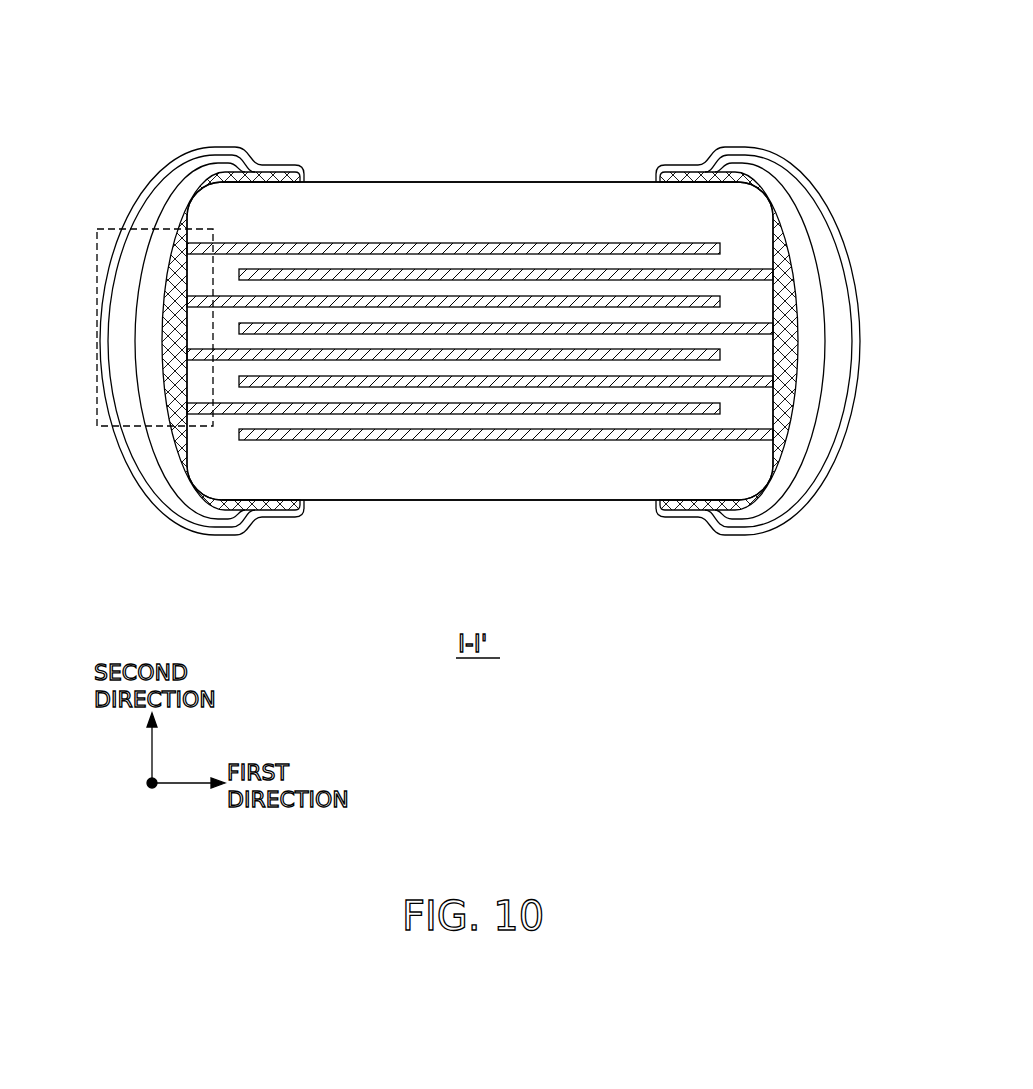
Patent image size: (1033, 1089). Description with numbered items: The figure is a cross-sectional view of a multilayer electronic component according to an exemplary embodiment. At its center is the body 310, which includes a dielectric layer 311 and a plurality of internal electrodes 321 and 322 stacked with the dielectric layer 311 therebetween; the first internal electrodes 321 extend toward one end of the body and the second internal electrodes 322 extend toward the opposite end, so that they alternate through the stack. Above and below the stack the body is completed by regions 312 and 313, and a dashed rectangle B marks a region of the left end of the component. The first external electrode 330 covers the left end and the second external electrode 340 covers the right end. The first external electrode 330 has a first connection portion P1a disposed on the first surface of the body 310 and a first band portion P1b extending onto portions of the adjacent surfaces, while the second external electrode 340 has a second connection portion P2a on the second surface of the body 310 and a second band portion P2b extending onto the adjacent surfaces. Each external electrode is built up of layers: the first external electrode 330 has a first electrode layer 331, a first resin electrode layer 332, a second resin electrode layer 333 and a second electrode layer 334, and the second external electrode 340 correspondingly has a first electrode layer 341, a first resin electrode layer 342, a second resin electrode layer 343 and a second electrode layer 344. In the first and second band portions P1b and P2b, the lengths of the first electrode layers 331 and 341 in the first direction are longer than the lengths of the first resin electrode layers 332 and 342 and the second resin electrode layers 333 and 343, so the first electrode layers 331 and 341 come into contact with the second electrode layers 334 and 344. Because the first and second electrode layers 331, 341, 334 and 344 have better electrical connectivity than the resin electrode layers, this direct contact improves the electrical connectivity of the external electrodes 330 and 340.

The body 310 is at (593, 182).
The dielectric layer 311 is at (556, 262).
The upper cover portion 312 is at (341, 207).
The lower cover portion 313 is at (428, 488).
The first internal electrode 321 is at (420, 243).
The second internal electrode 322 is at (486, 269).
The first external electrode 330 is at (690, 693).
The first electrode layer 331 is at (175, 296).
The first resin electrode layer 332 is at (150, 322).
The second resin electrode layer 333 is at (123, 349).
The second electrode layer 334 is at (103, 378).
The second external electrode 340 is at (830, 693).
The first electrode layer 341 is at (790, 297).
The first resin electrode layer 342 is at (815, 322).
The second resin electrode layer 343 is at (837, 350).
The second electrode layer 344 is at (855, 378).
The enlarged region B is at (110, 229).
The first connection portion P1a is at (128, 468).
The first band portion P1b is at (274, 130).
The second connection portion P2a is at (832, 468).
The second band portion P2b is at (697, 121).